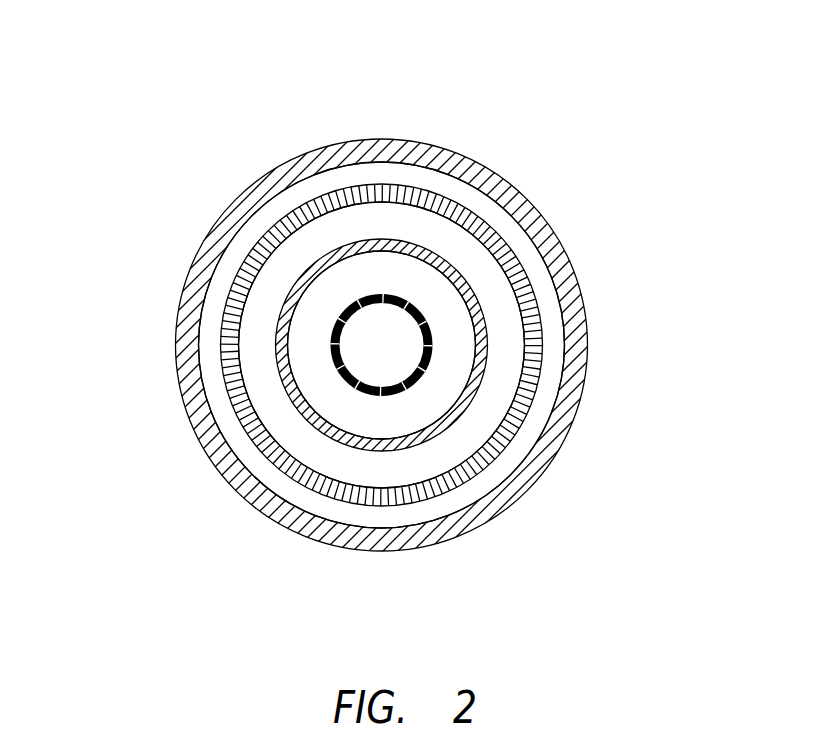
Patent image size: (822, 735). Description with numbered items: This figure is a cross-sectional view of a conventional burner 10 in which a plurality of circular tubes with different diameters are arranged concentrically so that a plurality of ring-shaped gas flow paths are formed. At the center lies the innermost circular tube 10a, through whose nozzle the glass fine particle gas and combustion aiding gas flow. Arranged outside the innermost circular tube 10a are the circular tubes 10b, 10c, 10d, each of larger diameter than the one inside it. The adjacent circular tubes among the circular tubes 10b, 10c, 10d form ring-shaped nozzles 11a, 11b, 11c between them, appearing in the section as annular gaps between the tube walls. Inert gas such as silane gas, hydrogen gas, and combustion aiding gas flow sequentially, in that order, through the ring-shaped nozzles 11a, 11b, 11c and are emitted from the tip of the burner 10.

The burner 10 is at (401, 288).
The innermost circular tube 10a is at (430, 330).
The circular tube 10b is at (487, 377).
The circular tube 10c is at (517, 430).
The circular tube 10d is at (503, 507).
The ring-shaped nozzle 11a is at (323, 307).
The ring-shaped nozzle 11b is at (257, 343).
The ring-shaped nozzle 11c is at (225, 410).